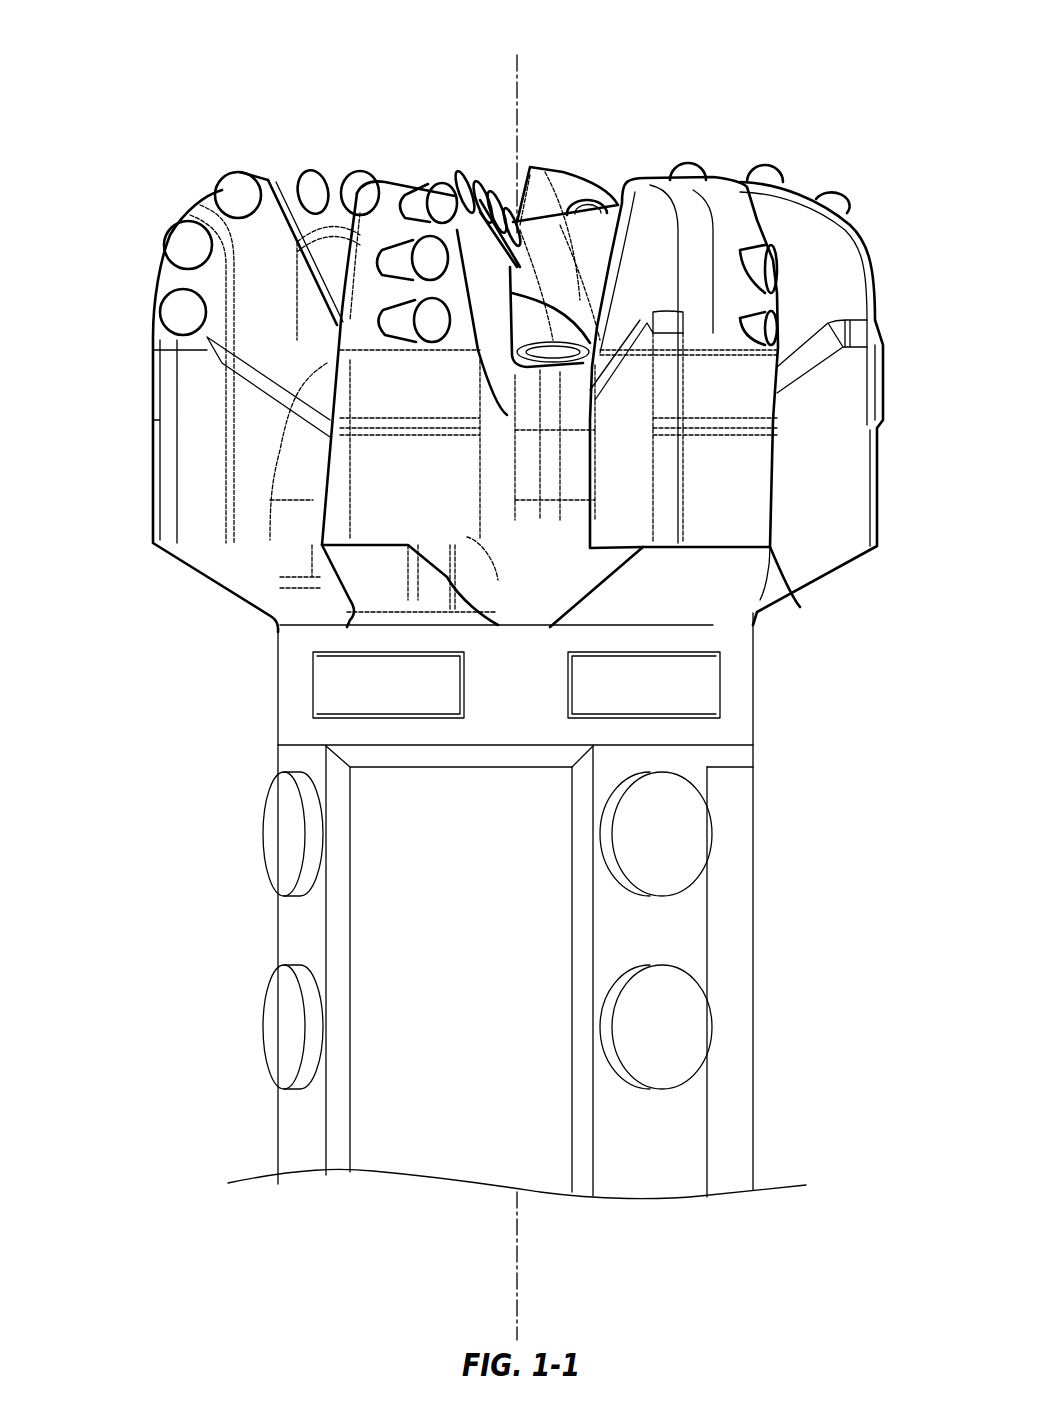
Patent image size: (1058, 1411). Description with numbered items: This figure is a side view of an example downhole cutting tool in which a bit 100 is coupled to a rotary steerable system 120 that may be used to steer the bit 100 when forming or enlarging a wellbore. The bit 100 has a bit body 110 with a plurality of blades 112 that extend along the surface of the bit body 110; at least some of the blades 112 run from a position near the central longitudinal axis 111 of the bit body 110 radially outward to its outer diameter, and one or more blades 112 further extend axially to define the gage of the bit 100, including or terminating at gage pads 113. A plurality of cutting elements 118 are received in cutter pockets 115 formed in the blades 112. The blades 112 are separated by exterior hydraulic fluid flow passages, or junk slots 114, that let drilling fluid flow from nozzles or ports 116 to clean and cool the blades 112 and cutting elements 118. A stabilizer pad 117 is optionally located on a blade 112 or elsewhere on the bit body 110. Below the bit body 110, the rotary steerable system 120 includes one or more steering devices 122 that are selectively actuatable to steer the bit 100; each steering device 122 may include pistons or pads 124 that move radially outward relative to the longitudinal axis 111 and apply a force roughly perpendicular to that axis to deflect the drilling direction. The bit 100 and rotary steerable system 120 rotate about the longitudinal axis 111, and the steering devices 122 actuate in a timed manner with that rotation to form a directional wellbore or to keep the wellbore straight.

The bit 100 is at (228, 50).
The bit body 110 is at (873, 217).
The central longitudinal axis 111 is at (513, 83).
The blades 112 is at (764, 521).
The gage pads 113 is at (348, 520).
The junk slots 114 is at (537, 520).
The cutter pockets 115 is at (403, 333).
The nozzles or ports 116 is at (560, 300).
The stabilizer pad 117 is at (328, 683).
The cutting elements 118 is at (298, 198).
The rotary steerable system 120 is at (769, 833).
The steering device 122 is at (259, 833).
The pistons or pads 124 is at (278, 1002).